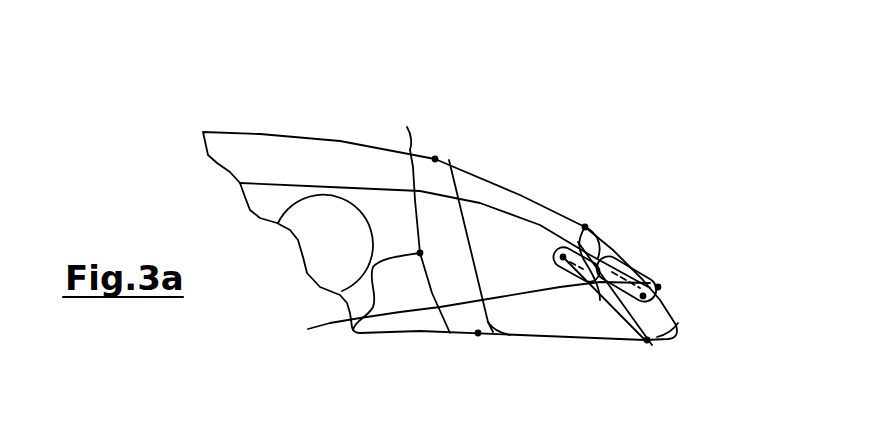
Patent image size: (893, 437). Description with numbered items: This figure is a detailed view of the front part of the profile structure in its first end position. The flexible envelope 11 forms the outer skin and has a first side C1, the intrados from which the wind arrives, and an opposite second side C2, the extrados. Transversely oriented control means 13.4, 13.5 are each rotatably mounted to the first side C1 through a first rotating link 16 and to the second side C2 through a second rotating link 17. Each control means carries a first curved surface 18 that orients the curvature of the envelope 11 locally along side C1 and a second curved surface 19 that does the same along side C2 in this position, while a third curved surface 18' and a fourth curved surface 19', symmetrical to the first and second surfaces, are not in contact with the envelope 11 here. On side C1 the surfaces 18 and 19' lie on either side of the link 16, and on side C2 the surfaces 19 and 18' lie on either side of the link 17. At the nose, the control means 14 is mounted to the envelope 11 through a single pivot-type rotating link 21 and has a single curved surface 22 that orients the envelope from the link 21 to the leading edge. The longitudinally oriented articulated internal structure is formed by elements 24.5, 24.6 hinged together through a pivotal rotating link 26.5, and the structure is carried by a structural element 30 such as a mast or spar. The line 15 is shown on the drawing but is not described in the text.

The envelope 11 is at (235, 132).
The structural element 30 is at (323, 217).
The control means 13.4 is at (447, 188).
The element of the articulated internal structure 24.5 is at (377, 197).
The first curved surface 18 is at (436, 269).
The third curved surface 18' is at (391, 128).
The second curved surface 19 is at (469, 215).
The fourth curved surface 19' is at (519, 357).
The second rotating link 17 is at (435, 159).
The first side of the envelope C1 is at (409, 357).
The second side of the envelope C2 is at (524, 80).
The contour line 15 is at (757, 252).
The control means 13.5 is at (603, 275).
The rotating link 26.5 is at (577, 290).
The rotating link 21 is at (658, 287).
The element of the articulated internal structure 24.6 is at (605, 300).
The first rotating link 16 is at (478, 335).
The single curved surface 22 is at (670, 326).
The control means (nose) 14 is at (678, 331).